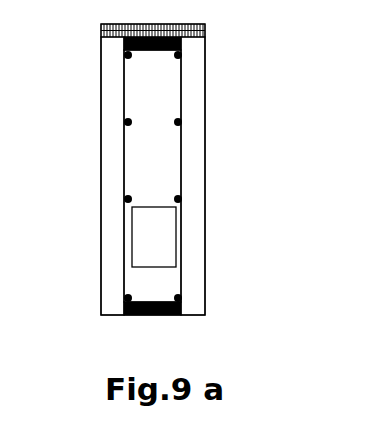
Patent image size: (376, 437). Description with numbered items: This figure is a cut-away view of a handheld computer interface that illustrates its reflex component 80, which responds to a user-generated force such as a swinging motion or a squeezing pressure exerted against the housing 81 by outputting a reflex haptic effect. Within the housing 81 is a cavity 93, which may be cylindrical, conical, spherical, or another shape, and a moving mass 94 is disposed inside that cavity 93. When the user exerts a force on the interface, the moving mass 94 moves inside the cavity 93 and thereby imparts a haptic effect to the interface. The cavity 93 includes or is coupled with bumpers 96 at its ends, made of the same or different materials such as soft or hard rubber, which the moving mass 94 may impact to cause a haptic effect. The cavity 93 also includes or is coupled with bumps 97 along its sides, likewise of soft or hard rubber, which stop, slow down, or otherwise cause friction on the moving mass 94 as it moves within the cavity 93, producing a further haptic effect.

The reflex component 80 is at (274, 60).
The housing 81 is at (115, 224).
The cavity 93 is at (153, 172).
The moving mass 94 is at (153, 234).
The bumpers 96 is at (170, 44).
The bumps 97 is at (128, 122).